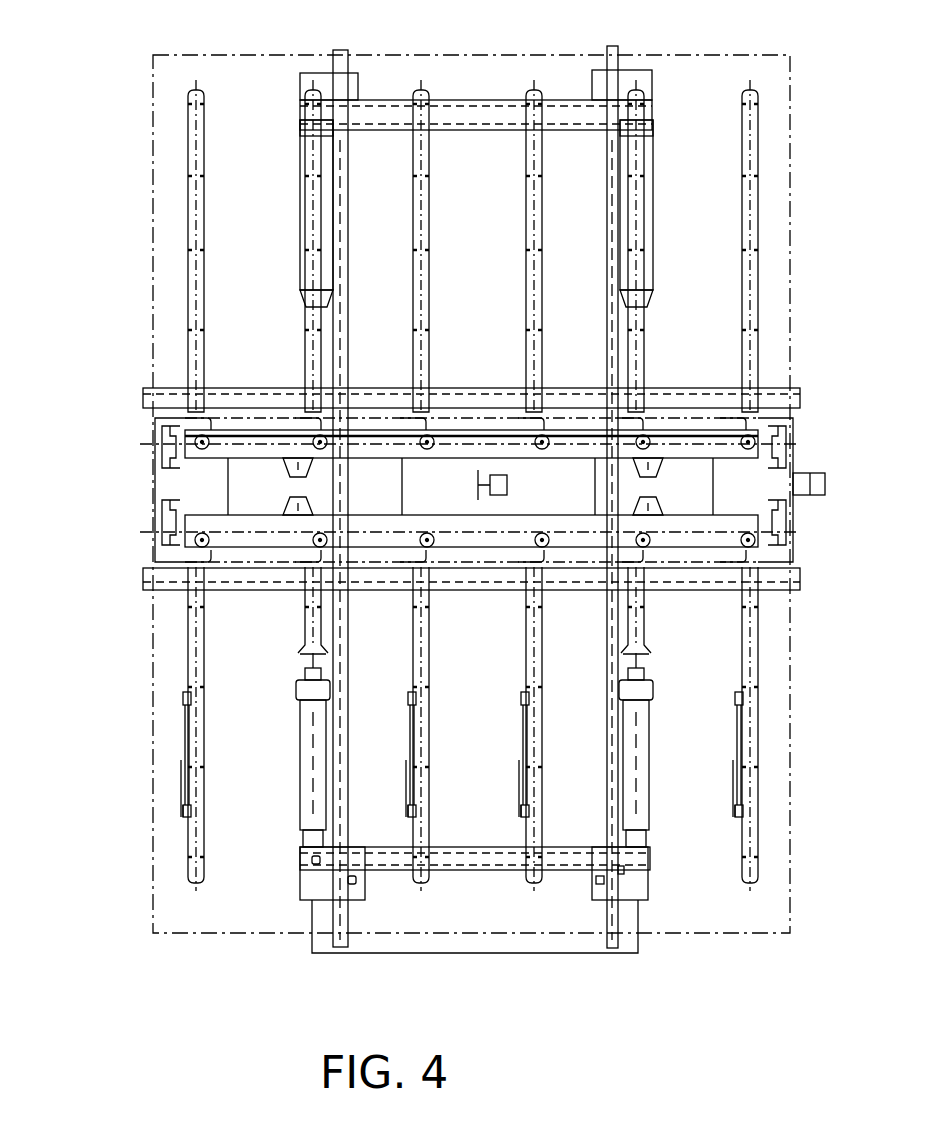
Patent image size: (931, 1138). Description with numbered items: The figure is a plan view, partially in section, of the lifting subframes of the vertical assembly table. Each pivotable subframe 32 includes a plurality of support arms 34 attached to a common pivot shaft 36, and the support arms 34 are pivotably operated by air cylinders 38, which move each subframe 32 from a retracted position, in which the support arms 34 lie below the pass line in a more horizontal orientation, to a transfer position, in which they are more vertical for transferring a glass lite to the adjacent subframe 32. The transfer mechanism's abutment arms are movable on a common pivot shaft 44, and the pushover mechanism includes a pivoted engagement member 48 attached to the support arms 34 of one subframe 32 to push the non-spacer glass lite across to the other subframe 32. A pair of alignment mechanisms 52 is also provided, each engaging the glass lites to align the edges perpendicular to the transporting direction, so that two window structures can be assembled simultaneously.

The pivotable subframe 32 is at (822, 248).
The support arms 34 is at (205, 115).
The common pivot shaft 36 is at (280, 525).
The air cylinders 38 is at (300, 232).
The common pivot shaft 44 is at (482, 442).
The pivoted engagement member 48 is at (183, 718).
The alignment mechanism 52 is at (505, 485).